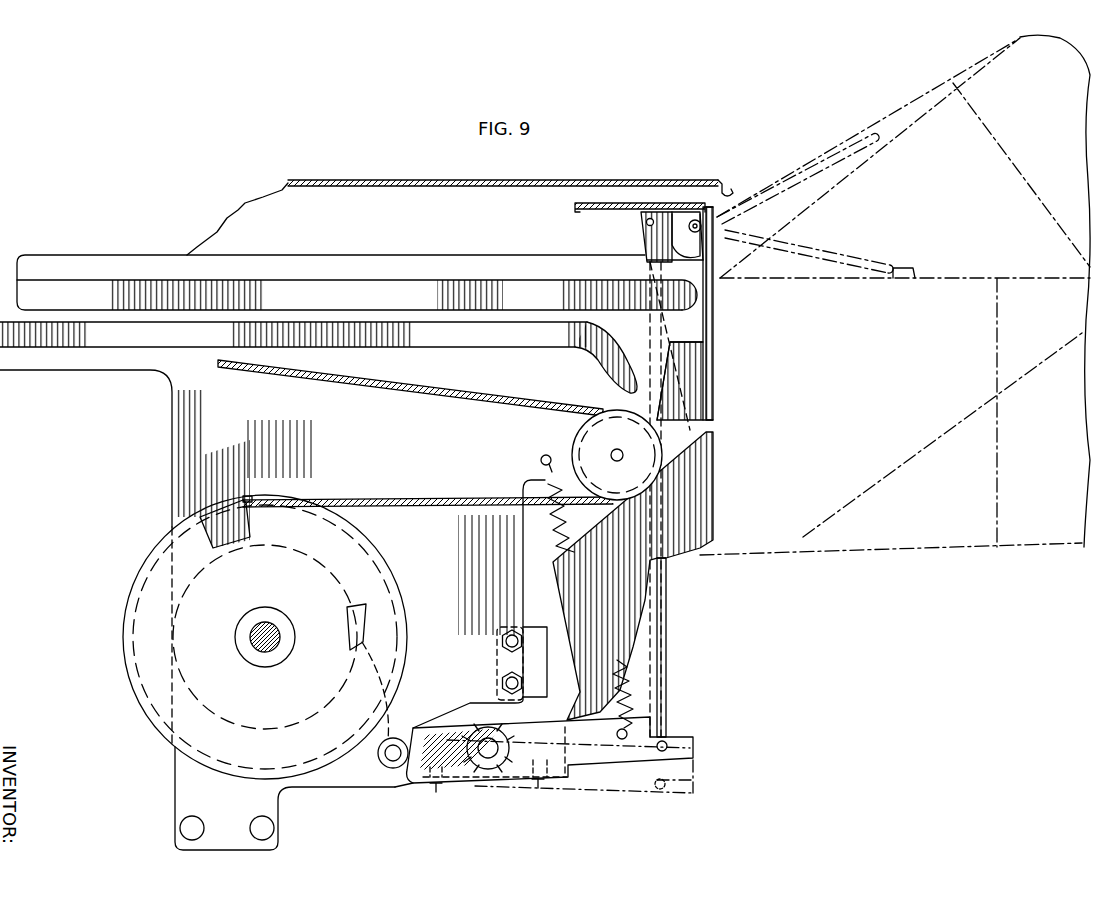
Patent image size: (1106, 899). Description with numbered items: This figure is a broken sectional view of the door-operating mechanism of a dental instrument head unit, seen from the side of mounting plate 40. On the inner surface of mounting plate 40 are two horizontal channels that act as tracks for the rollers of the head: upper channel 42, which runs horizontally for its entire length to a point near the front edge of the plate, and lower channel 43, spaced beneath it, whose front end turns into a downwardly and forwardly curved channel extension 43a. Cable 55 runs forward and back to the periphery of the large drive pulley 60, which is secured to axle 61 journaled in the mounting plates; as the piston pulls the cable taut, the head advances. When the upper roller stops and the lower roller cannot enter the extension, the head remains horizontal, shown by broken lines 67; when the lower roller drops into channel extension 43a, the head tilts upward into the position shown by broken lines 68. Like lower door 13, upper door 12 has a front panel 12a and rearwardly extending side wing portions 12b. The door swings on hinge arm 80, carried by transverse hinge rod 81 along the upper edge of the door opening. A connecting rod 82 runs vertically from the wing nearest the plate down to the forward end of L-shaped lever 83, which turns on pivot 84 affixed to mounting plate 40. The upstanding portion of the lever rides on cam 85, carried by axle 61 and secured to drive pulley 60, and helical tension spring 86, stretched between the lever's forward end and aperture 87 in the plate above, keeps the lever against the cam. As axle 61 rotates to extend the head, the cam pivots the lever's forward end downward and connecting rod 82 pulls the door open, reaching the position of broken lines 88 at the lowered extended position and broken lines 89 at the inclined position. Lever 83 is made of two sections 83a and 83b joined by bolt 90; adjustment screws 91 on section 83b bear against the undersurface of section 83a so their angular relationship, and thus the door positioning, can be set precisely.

The upper door 12 is at (714, 373).
The front panel 12a is at (718, 318).
The side wing portions 12b is at (700, 352).
The lower door 13 is at (715, 478).
The mounting plate 40 is at (178, 478).
The upper channel 42 is at (372, 282).
The lower channel 43 is at (433, 323).
The channel extension 43a is at (603, 380).
The cable 55 is at (418, 386).
The drive pulley 60 is at (125, 663).
The axle 61 is at (255, 632).
The broken lines 67 is at (945, 275).
The broken lines 68 is at (955, 85).
The hinge arm 80 is at (660, 207).
The hinge rod 81 is at (695, 218).
The connecting rod 82 is at (668, 628).
The L-shaped lever 83 is at (692, 736).
The lever section 83a is at (385, 774).
The lever section 83b is at (697, 757).
The pivot 84 is at (393, 772).
The cam 85 is at (312, 583).
The helical tension spring 86 is at (620, 676).
The aperture 87 is at (542, 458).
The broken lines 88 is at (830, 250).
The broken lines 89 is at (787, 178).
The bolt 90 is at (488, 770).
The adjustment screws 91 is at (436, 792).